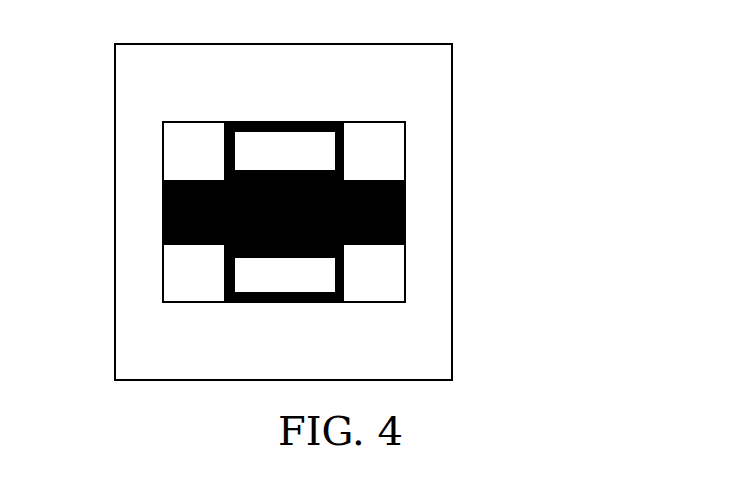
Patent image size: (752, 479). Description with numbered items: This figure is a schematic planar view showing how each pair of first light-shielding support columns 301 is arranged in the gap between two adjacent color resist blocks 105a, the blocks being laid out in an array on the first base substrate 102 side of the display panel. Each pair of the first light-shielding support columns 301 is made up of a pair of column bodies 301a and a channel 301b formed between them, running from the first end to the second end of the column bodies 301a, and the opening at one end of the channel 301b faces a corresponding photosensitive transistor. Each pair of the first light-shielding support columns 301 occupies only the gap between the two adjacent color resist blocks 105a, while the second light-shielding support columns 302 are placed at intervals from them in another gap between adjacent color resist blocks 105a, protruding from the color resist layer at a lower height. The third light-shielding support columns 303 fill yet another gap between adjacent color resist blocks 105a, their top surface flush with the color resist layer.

The first base substrate 102 is at (427, 263).
The color resist blocks 105a is at (405, 152).
The second light-shielding support columns 302 is at (398, 210).
The third light-shielding support columns 303 is at (245, 212).
The pairs of first light-shielding support columns 301 is at (345, 150).
The column bodies 301a is at (428, 177).
The channel 301b is at (284, 150).